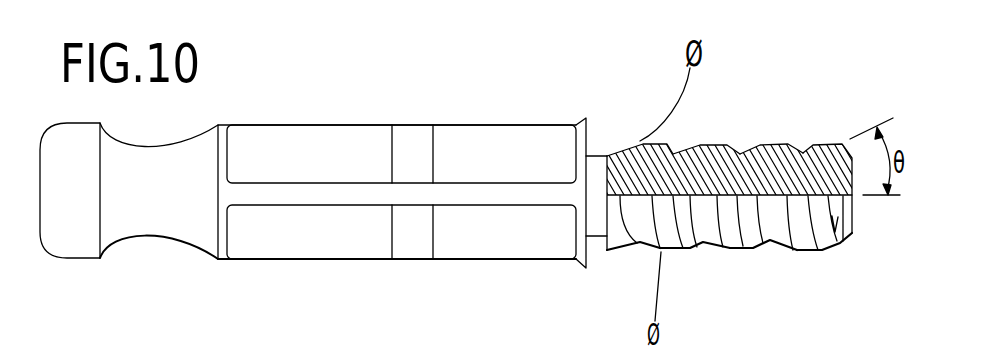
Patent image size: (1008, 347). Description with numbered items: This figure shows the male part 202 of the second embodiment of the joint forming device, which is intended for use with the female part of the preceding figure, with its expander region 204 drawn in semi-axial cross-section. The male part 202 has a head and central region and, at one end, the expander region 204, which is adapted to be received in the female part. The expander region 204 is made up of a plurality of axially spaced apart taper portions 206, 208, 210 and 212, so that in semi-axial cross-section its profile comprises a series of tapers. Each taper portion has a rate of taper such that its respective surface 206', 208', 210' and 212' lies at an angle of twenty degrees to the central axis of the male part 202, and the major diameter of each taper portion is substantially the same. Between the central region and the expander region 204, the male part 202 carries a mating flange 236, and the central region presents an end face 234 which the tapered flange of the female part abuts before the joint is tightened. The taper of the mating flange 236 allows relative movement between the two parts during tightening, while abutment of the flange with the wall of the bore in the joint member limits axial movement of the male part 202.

The male part 202 is at (330, 276).
The expander region 204 is at (697, 280).
The taper portion 206 is at (640, 104).
The taper portion 208 is at (717, 102).
The taper portion 210 is at (784, 102).
The taper portion 212 is at (845, 141).
The surface 206' is at (623, 271).
The surface 208' is at (720, 258).
The surface 210' is at (786, 271).
The surface 212' is at (849, 258).
The end face 234 is at (588, 131).
The mating flange 236 is at (577, 266).